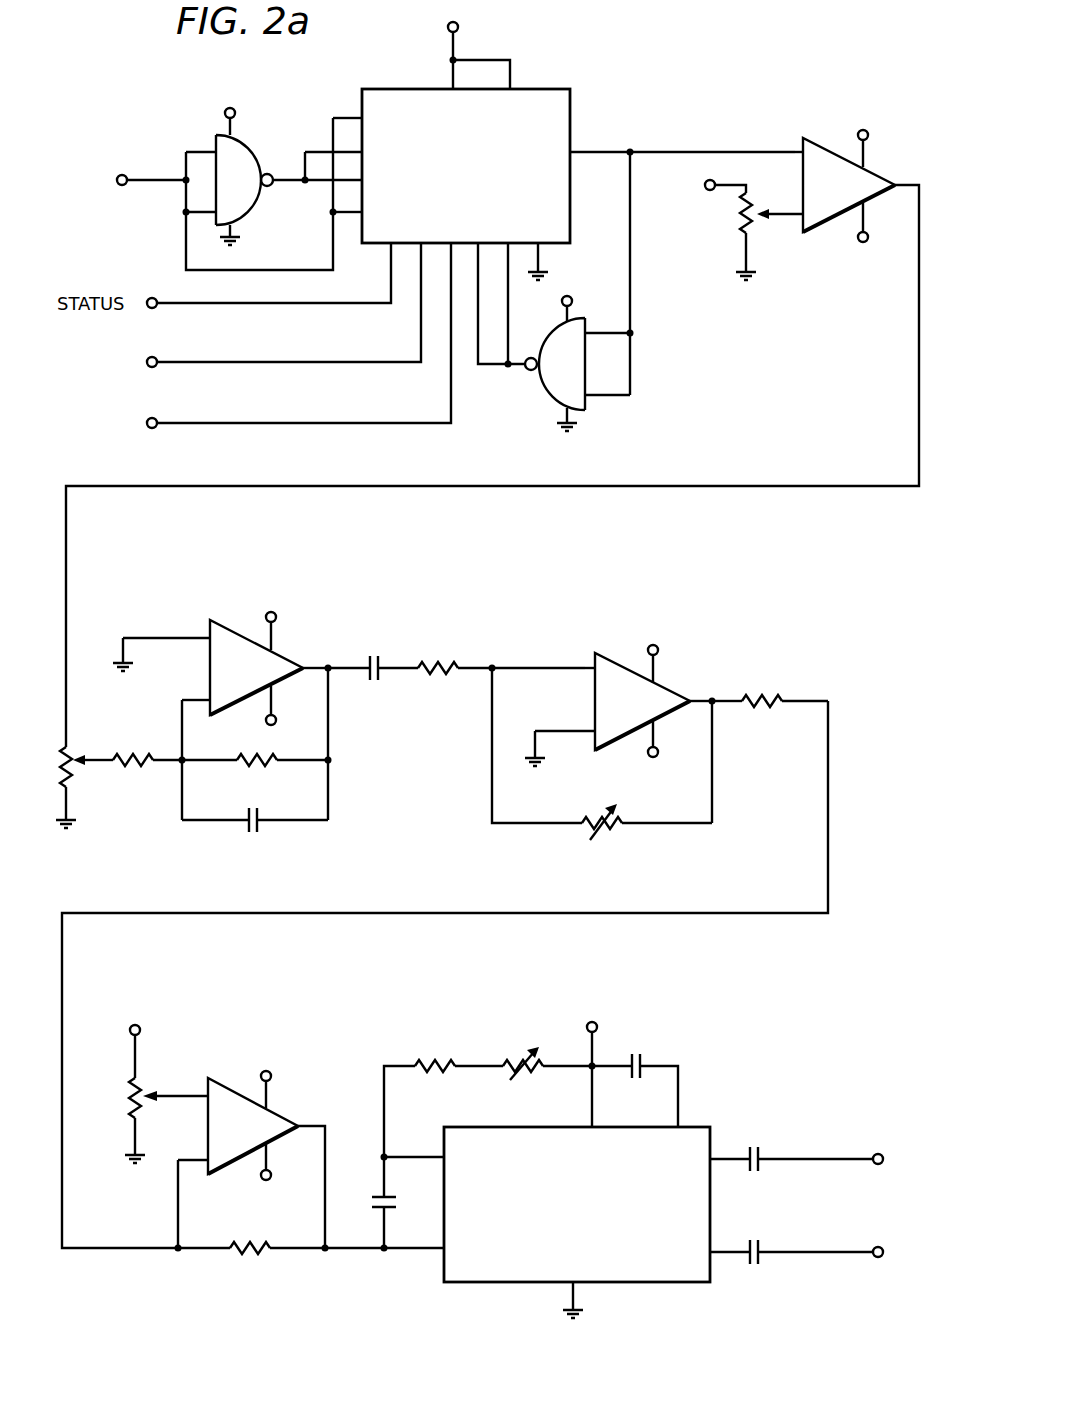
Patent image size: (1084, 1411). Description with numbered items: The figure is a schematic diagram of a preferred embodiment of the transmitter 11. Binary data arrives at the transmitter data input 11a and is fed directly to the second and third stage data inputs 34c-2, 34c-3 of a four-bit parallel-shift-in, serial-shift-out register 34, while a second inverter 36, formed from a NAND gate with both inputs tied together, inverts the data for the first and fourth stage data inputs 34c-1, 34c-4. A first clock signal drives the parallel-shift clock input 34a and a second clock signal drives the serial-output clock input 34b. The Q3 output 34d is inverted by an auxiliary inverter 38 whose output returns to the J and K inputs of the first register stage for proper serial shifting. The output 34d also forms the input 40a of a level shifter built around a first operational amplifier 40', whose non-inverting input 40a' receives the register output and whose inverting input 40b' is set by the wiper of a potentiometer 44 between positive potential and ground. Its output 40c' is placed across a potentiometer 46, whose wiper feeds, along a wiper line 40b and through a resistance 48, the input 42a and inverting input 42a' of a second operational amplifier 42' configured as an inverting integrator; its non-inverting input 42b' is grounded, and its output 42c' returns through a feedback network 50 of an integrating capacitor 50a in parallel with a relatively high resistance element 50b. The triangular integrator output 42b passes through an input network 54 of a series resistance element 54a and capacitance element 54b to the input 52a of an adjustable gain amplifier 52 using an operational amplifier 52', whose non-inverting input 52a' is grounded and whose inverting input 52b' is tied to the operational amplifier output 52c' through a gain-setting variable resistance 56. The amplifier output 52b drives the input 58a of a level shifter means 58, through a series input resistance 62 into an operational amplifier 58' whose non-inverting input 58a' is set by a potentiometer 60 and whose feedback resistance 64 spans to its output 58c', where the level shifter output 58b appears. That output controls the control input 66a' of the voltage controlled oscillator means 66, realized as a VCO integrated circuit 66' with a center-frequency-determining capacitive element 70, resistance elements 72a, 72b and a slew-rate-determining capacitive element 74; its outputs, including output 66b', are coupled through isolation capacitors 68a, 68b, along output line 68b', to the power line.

The transmitter 11 is at (690, 328).
The transmitter data input 11a is at (122, 173).
The four-bit parallel-shift-in, serial-shift-out register 34 is at (558, 88).
The input-parallel-shift P/S clock input 34a is at (157, 362).
The serial-output clock CLK input 34b is at (158, 422).
The first stage data input 34c-1 is at (350, 118).
The second stage data input 34c-2 is at (316, 150).
The third stage data input 34c-3 is at (318, 182).
The fourth stage data input 34c-4 is at (352, 213).
The shift register Q3 output 34d is at (577, 148).
The second inverter 36 is at (213, 137).
The auxiliary inverter 38 is at (541, 393).
The first operational amplifier 40' is at (849, 160).
The input of level shifter and inverter means 40a is at (712, 117).
The non-inverting input of first operational amplifier 40a' is at (785, 109).
The wiper line 40b is at (97, 731).
The inverting input of first operational amplifier 40b' is at (788, 242).
The output of first operational amplifier 40c' is at (495, 442).
The potentiometer 44 is at (737, 215).
The potentiometer 46 is at (64, 752).
The resistance 48 is at (145, 762).
The second operational amplifier 42' is at (256, 649).
The input of integrator means 42a is at (156, 788).
The inverting input of second operational amplifier 42a' is at (177, 685).
The non-inverting input of second operational amplifier 42b' is at (161, 624).
The integrator means output 42b is at (303, 691).
The output of second operational amplifier 42c' is at (340, 636).
The feedback network 50 is at (340, 810).
The integrating capacitor 50a is at (248, 828).
The relatively high resistance element 50b is at (244, 765).
The input network 54 is at (432, 642).
The resistance element 54a is at (427, 682).
The capacitance element 54b is at (366, 682).
The adjustable gain amplifier 52 is at (576, 745).
The operational amplifier 52' is at (642, 679).
The input of adjustable gain amplifier 52a is at (458, 632).
The non-inverting input of operational amplifier 52' 52a' is at (549, 724).
The inverting input of operational amplifier 52' 52b' is at (563, 640).
The amplifier output 52b is at (741, 761).
The operational amplifier output 52c' is at (713, 671).
The gain-setting variable resistance 56 is at (610, 830).
The input of level shifter means 58a is at (754, 658).
The series input resistance 62 is at (777, 698).
The level shifter means 58 is at (445, 1000).
The operational amplifier 58' is at (253, 1105).
The non-inverting input of operational amplifier 58' 58a' is at (177, 1054).
The level shifter means output 58b is at (327, 1250).
The operational amplifier output 58c' is at (247, 1233).
The potentiometer 60 is at (127, 1098).
The feedback resistance 64 is at (243, 1243).
The voltage controlled oscillator means 66 is at (676, 1176).
The VCO integrated circuit 66' is at (627, 1321).
The control input of VCO integrated circuit 66a' is at (380, 1231).
The output of VCO integrated circuit 66b' is at (737, 1122).
The isolation capacitor 68a is at (764, 1150).
The isolation capacitor 68b is at (816, 1225).
The oscillator second output line 68b' is at (755, 1285).
The center-frequency-determining capacitive element 70 is at (645, 1064).
The resistance element 72a is at (425, 1060).
The variable resistance 72b is at (515, 1060).
The slew-rate-determining capacitive element 74 is at (380, 1196).